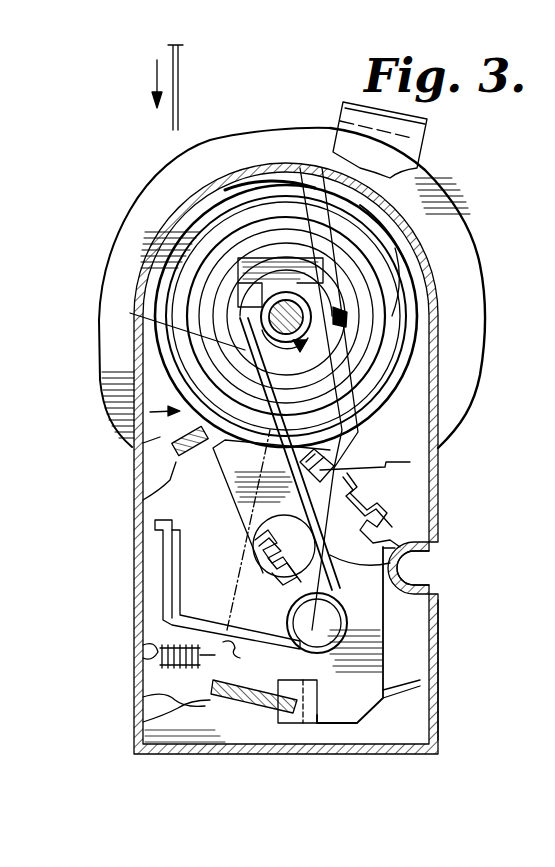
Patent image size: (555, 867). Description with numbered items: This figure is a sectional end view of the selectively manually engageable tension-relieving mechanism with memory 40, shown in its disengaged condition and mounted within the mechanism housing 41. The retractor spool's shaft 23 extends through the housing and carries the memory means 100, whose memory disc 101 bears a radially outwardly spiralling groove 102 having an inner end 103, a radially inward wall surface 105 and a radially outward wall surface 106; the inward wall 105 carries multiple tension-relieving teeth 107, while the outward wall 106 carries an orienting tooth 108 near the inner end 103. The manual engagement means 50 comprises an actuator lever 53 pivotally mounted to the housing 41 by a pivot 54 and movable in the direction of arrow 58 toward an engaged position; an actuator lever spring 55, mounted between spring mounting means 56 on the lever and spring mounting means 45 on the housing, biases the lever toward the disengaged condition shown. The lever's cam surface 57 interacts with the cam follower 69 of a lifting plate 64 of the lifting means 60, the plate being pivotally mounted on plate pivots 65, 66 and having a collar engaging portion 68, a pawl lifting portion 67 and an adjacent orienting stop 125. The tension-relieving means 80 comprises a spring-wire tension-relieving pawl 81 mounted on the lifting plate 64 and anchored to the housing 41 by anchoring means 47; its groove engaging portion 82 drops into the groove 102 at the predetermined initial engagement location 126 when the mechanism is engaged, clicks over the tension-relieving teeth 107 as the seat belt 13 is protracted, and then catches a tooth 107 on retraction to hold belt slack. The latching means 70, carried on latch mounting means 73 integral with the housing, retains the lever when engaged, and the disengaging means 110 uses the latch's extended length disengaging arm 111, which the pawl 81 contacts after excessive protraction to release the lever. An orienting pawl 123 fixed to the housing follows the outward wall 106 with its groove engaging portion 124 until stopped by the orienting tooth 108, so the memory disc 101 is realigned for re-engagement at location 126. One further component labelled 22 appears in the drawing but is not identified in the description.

The seat belt 13 is at (160, 46).
The outer housing shell 22 is at (173, 181).
The shaft 23 is at (278, 258).
The tension-relieving mechanism with memory 40 is at (445, 731).
The mechanism housing 41 is at (440, 622).
The spring mounting means 45 is at (135, 628).
The anchoring means 47 is at (160, 551).
The manual engagement means 50 is at (305, 700).
The actuator lever 53 is at (420, 564).
The pivot 54 is at (262, 539).
The actuator lever spring 55 is at (150, 688).
The spring mounting means 56 is at (240, 661).
The cam surface 57 is at (145, 718).
The arrow 58 is at (416, 110).
The lifting means 60 is at (400, 538).
The lifting plate 64 is at (362, 697).
The plate pivot 65 is at (270, 573).
The plate pivot 66 is at (398, 505).
The pawl lifting portion 67 is at (338, 450).
The collar engaging portion 68 is at (182, 232).
The cam follower 69 is at (313, 724).
The latching means 70 is at (143, 500).
The latch mounting means 73 is at (163, 458).
The tension-relieving means 80 is at (240, 388).
The tension-relieving pawl 81 is at (257, 462).
The groove engaging portion 82 is at (247, 322).
The memory means 100 is at (412, 264).
The memory disc 101 is at (386, 233).
The spiralling groove 102 is at (372, 378).
The inner end 103 is at (240, 203).
The radially inward wall surface 105 is at (392, 360).
The radially outward wall surface 106 is at (400, 409).
The tension-relieving teeth 107 is at (270, 348).
The orienting tooth 108 is at (342, 334).
The disengaging means 110 is at (140, 412).
The extended length disengaging arm 111 is at (133, 445).
The orienting pawl 123 is at (336, 238).
The groove engaging portion 124 is at (345, 318).
The orienting stop 125 is at (410, 462).
The initial groove engagement location 126 is at (240, 290).